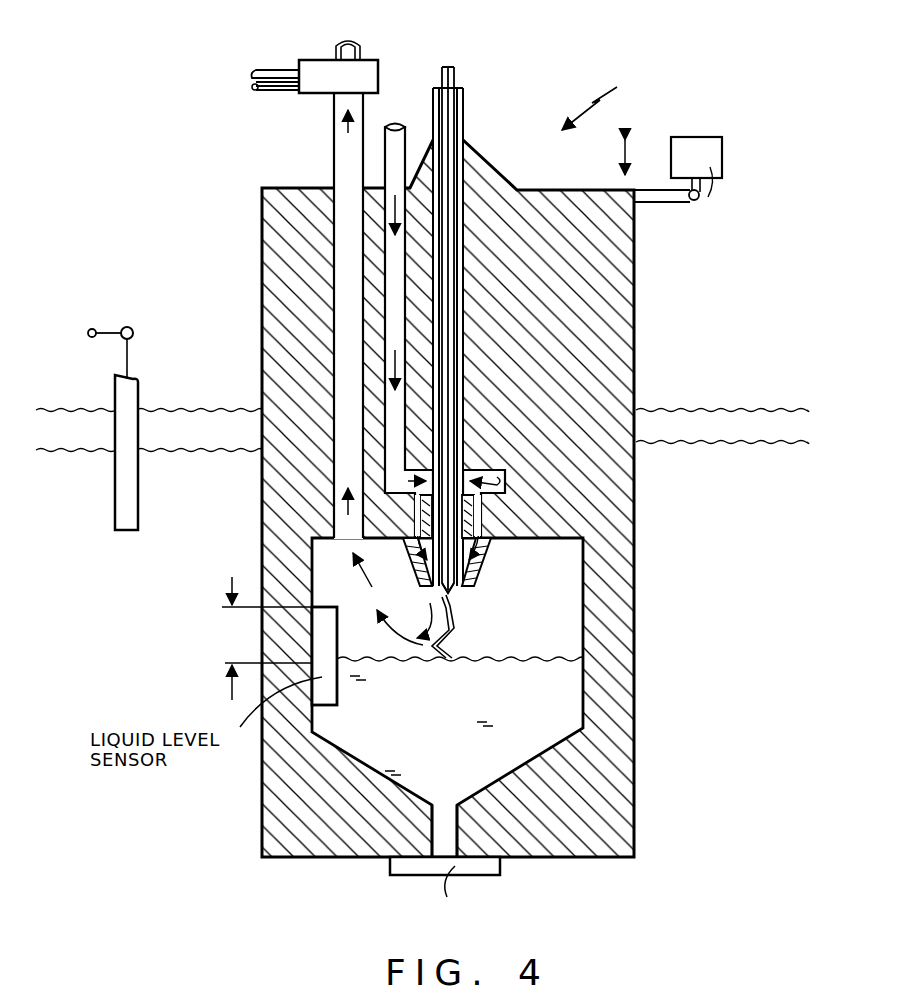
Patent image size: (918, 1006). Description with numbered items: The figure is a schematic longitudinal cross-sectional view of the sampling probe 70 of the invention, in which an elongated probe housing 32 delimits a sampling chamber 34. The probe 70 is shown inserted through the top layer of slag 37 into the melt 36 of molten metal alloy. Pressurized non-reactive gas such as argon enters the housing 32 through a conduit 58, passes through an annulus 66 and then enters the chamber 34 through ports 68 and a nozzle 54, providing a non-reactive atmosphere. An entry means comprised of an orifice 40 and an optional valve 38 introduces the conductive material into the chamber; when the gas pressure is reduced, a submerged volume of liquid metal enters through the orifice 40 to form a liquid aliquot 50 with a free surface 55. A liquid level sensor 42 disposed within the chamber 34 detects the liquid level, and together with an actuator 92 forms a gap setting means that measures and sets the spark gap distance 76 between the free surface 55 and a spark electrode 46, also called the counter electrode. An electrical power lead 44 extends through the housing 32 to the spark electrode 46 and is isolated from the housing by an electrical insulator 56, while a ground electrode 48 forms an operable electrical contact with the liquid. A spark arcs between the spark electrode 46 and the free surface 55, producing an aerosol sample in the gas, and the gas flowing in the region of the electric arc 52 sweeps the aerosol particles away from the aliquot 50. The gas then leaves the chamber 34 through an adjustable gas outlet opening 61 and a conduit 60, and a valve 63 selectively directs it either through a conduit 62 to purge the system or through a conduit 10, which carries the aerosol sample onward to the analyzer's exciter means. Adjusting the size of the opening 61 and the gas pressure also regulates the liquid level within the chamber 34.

The conduit 10 is at (265, 72).
The probe housing 32 is at (625, 320).
The sampling chamber 34 is at (569, 608).
The melt 36 is at (746, 499).
The slag 37 is at (746, 438).
The valve 38 is at (500, 872).
The orifice 40 is at (443, 850).
The liquid level sensor 42 is at (330, 690).
The electrical power lead 44 is at (458, 73).
The spark electrode 46 is at (452, 590).
The ground electrode 48 is at (130, 490).
The liquid aliquot 50 is at (455, 724).
The electric arc 52 is at (455, 648).
The nozzle 54 is at (485, 570).
The free surface 55 is at (475, 660).
The electrical insulator 56 is at (465, 125).
The conduit 58 is at (393, 132).
The conduit 60 is at (338, 148).
The gas outlet opening 61 is at (343, 543).
The conduit 62 is at (363, 45).
The valve 63 is at (318, 62).
The annulus 66 is at (486, 476).
The ports 68 is at (418, 512).
The sampling probe 70 is at (605, 98).
The spark gap distance 76 is at (265, 638).
The actuator 92 is at (697, 140).